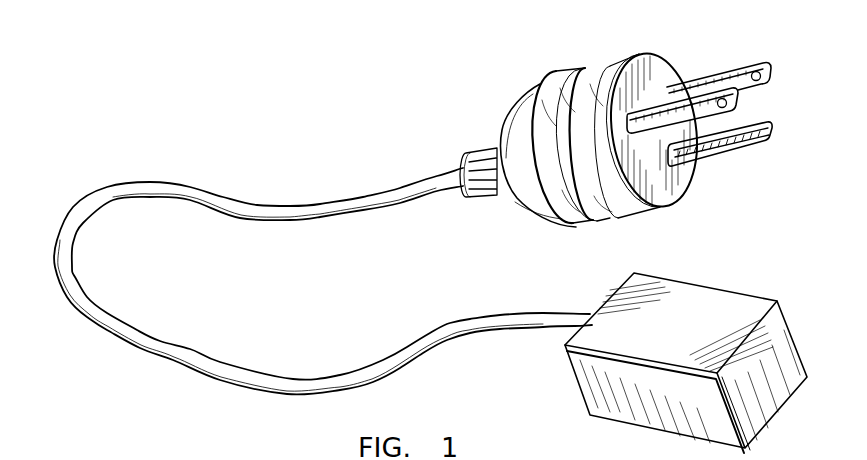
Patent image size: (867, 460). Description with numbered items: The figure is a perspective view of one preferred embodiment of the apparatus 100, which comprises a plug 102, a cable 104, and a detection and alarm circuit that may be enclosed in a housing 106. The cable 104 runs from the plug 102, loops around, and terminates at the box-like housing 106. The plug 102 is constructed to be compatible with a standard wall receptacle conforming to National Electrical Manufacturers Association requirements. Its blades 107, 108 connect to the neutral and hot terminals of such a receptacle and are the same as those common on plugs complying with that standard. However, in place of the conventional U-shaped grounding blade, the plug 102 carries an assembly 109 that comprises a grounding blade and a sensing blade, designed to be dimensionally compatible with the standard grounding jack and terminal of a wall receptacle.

The power cord assembly 100 is at (433, 148).
The plug 102 is at (590, 55).
The cable 104 is at (289, 206).
The housing 106 is at (697, 312).
The blade 107 is at (740, 97).
The blade 108 is at (719, 73).
The assembly 109 is at (760, 155).